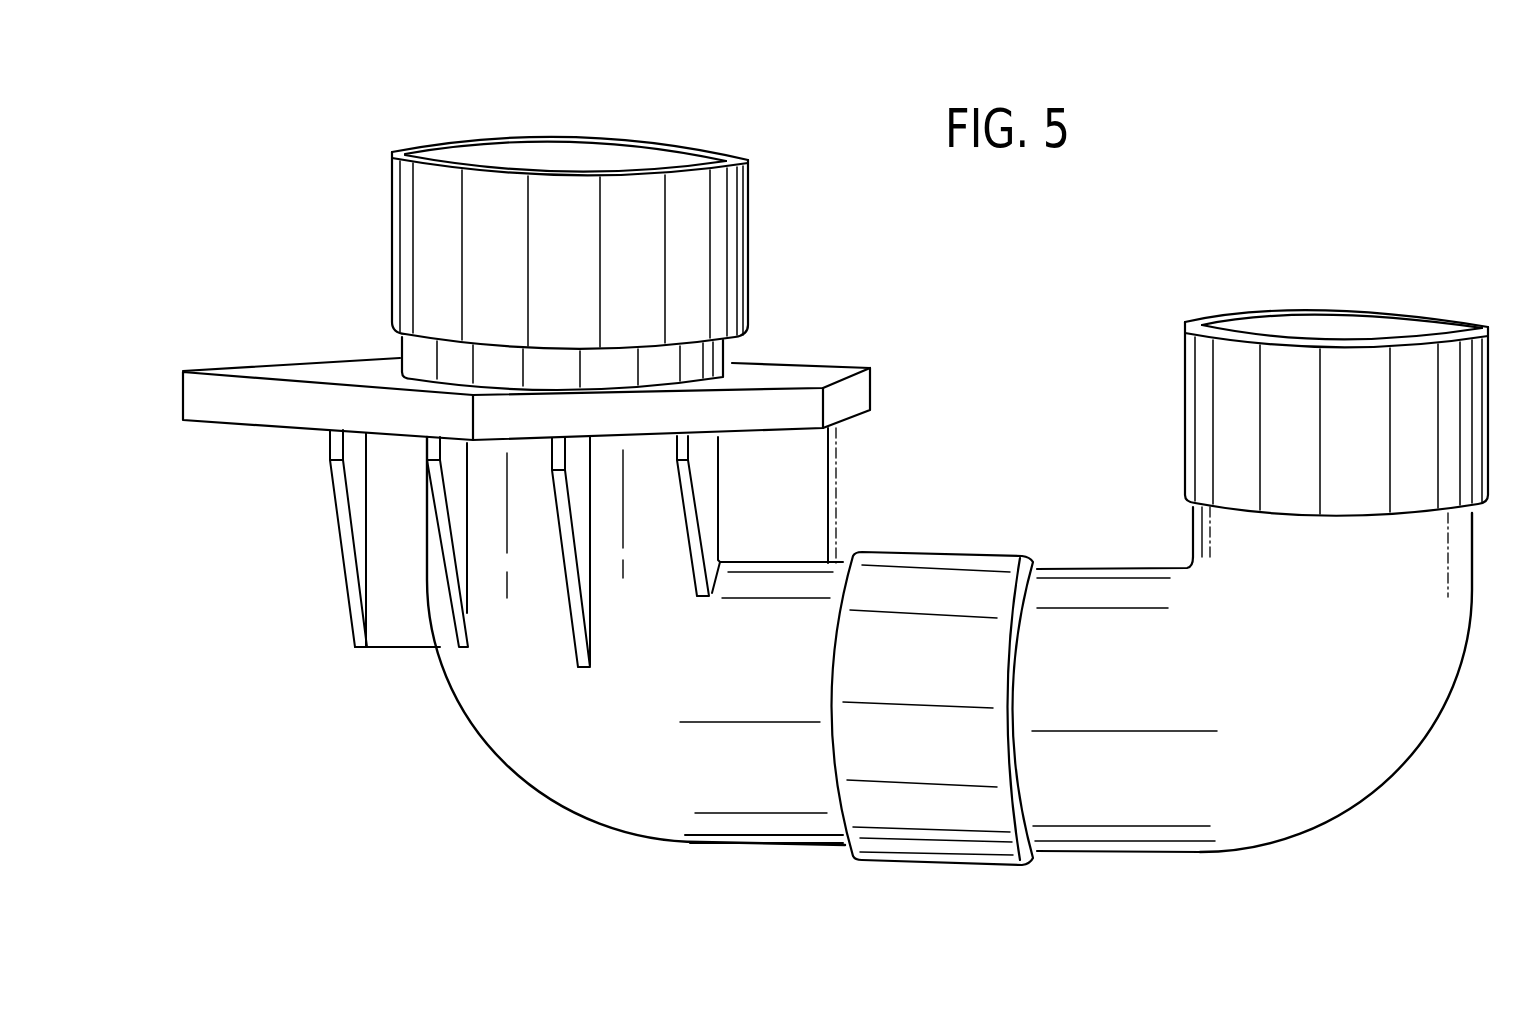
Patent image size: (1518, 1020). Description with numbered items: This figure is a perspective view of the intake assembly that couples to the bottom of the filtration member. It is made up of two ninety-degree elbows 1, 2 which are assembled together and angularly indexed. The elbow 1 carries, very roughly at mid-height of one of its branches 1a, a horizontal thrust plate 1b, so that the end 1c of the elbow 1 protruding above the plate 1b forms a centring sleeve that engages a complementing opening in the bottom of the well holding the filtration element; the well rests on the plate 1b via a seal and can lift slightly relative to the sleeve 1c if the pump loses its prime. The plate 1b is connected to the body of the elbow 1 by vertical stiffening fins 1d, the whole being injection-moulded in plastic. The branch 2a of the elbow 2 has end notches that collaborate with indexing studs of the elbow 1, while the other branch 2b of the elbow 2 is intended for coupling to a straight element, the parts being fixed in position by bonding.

The elbow 1 is at (506, 767).
The branch 1a is at (500, 597).
The thrust plate 1b is at (812, 377).
The end 1c is at (713, 213).
The vertical stiffening fins 1d is at (457, 542).
The elbow 2 is at (1391, 781).
The branch 2a is at (1057, 587).
The branch 2b is at (1228, 427).